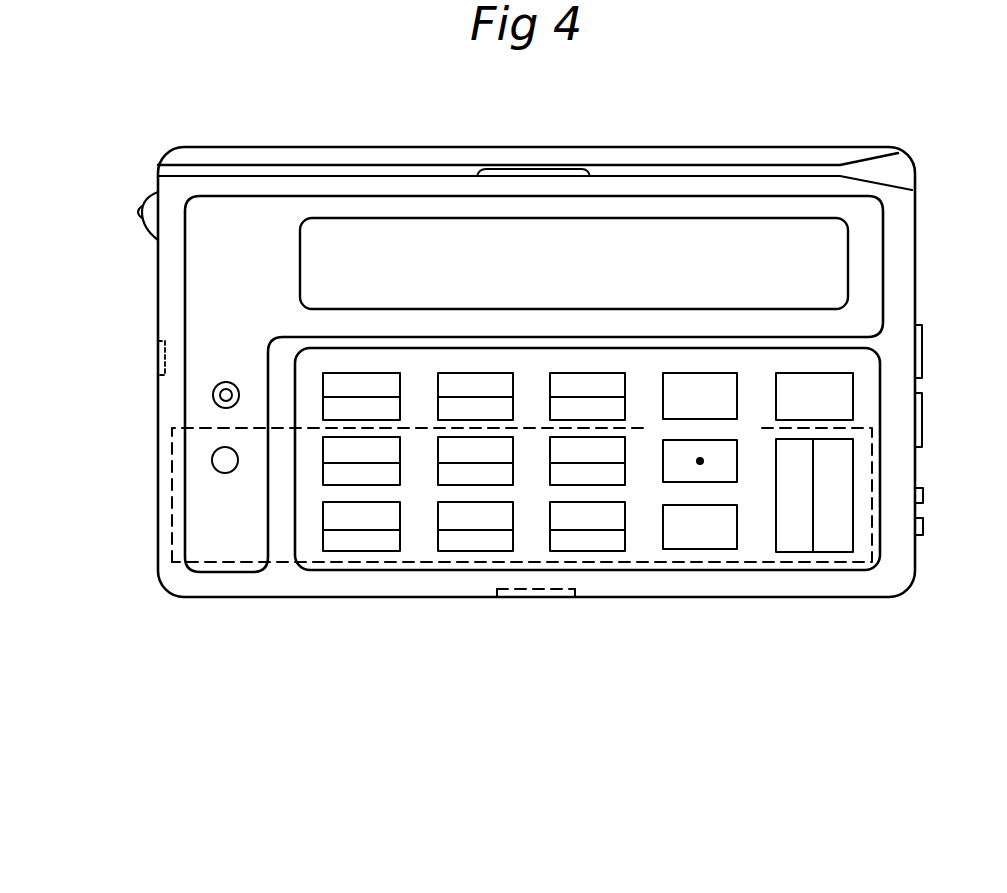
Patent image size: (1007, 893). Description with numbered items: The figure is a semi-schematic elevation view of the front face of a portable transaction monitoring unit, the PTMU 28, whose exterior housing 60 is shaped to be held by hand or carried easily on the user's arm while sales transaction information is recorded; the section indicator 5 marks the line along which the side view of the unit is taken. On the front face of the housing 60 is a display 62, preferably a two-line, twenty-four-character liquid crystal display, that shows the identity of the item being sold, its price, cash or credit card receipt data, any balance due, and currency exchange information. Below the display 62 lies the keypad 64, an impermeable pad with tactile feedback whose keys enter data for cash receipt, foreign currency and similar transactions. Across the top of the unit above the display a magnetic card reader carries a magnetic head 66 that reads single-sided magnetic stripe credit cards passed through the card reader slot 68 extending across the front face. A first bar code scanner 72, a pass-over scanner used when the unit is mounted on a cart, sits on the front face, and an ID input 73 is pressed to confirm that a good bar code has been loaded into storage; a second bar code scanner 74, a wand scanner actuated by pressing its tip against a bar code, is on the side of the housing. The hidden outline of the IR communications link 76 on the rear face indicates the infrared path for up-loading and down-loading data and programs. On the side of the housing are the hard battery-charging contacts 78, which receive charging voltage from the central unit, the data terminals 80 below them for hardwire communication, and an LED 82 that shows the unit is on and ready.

The section line 5- 5 is at (80, 663).
The PTMU 28 is at (776, 138).
The exterior housing 60 is at (897, 260).
The display 62 is at (327, 250).
The keypad 64 is at (423, 542).
The magnetic head 66 is at (530, 170).
The card reader slot 68 is at (638, 168).
The first bar code scanner 72 is at (213, 393).
The ID input 73 is at (214, 466).
The second bar code scanner 74 is at (152, 193).
The IR communications link 76 is at (287, 562).
The battery-charging contacts 78 is at (922, 358).
The data terminals 80 is at (923, 496).
The LED 82 is at (156, 368).